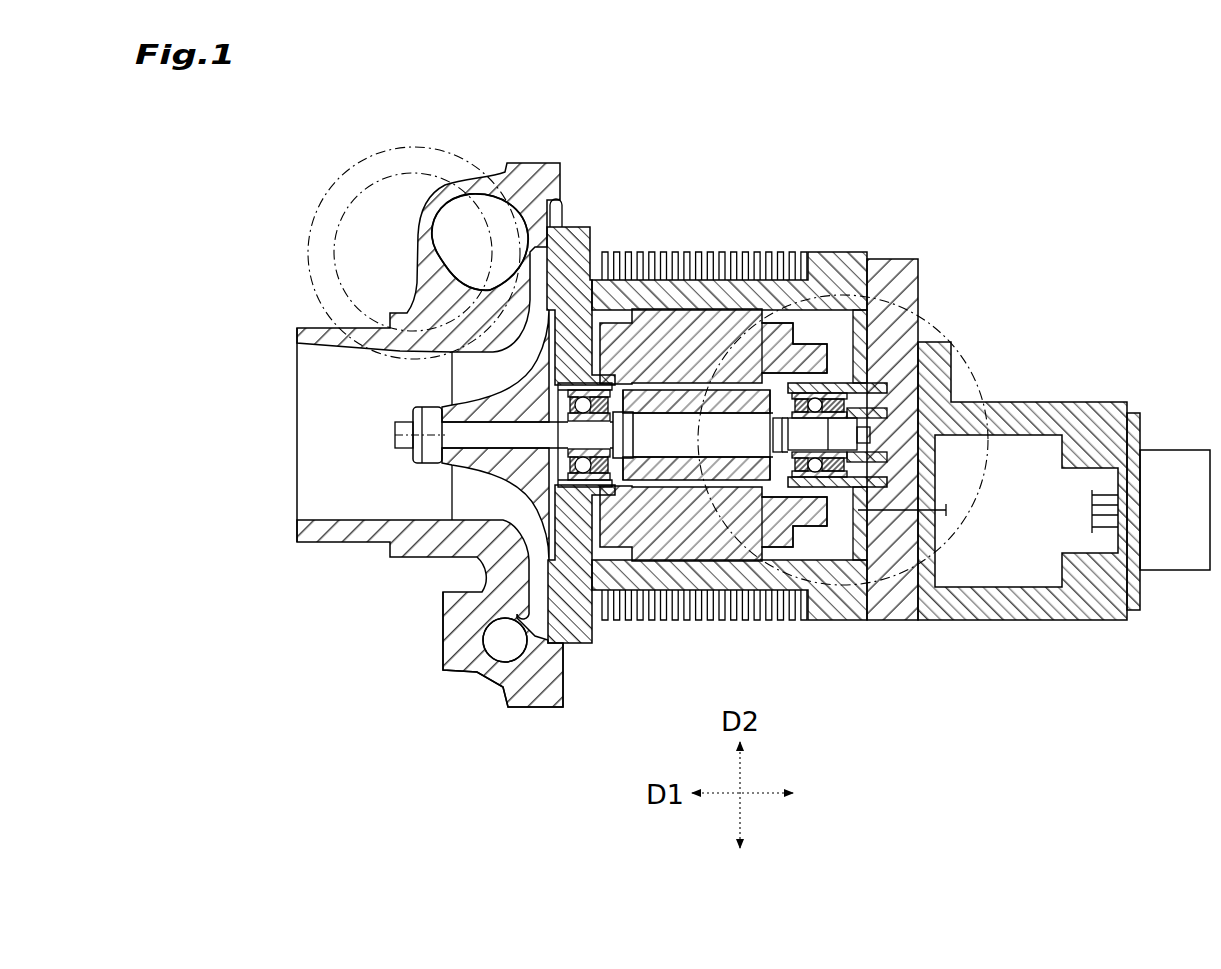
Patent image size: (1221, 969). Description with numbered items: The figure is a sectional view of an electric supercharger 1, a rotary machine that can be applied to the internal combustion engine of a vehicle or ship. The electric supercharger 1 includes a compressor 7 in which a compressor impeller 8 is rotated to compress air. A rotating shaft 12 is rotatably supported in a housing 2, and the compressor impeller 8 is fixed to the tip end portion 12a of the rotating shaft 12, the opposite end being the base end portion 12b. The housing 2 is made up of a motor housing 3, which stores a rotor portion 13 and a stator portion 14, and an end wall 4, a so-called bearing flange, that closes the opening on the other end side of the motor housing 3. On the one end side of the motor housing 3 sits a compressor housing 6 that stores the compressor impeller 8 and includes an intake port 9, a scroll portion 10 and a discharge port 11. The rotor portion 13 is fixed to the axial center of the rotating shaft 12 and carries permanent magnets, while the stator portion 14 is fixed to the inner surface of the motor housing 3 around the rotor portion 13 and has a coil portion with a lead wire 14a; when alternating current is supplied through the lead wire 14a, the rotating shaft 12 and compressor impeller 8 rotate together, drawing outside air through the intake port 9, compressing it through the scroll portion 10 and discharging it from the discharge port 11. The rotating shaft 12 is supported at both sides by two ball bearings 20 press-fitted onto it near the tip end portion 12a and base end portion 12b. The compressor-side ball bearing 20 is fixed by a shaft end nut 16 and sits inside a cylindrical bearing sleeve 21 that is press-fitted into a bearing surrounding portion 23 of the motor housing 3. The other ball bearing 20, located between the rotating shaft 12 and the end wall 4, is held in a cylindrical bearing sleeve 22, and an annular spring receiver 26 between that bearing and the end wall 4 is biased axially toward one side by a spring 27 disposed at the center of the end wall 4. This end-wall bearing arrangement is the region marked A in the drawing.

The electric supercharger 1 is at (978, 153).
The housing 2 is at (780, 210).
The motor housing 3 is at (815, 255).
The end wall 4 is at (905, 425).
The compressor housing 6 is at (456, 672).
The compressor 7 is at (338, 568).
The compressor impeller 8 is at (445, 492).
The intake port 9 is at (315, 445).
The scroll portion 10 is at (463, 225).
The discharge port 11 is at (372, 215).
The rotating shaft 12 is at (714, 470).
The tip end portion 12a is at (492, 440).
The base end portion 12b is at (782, 478).
The rotor portion 13 is at (665, 480).
The stator portion 14 is at (805, 333).
The lead wire 14a is at (840, 480).
The shaft end nut 16 is at (435, 438).
The ball bearing 20 is at (585, 392).
The bearing sleeve 21 is at (585, 470).
The bearing sleeve 22 is at (832, 482).
The bearing surrounding portion 23 is at (520, 600).
The spring receiver 26 is at (915, 470).
The spring 27 is at (948, 525).
The region A is at (960, 358).